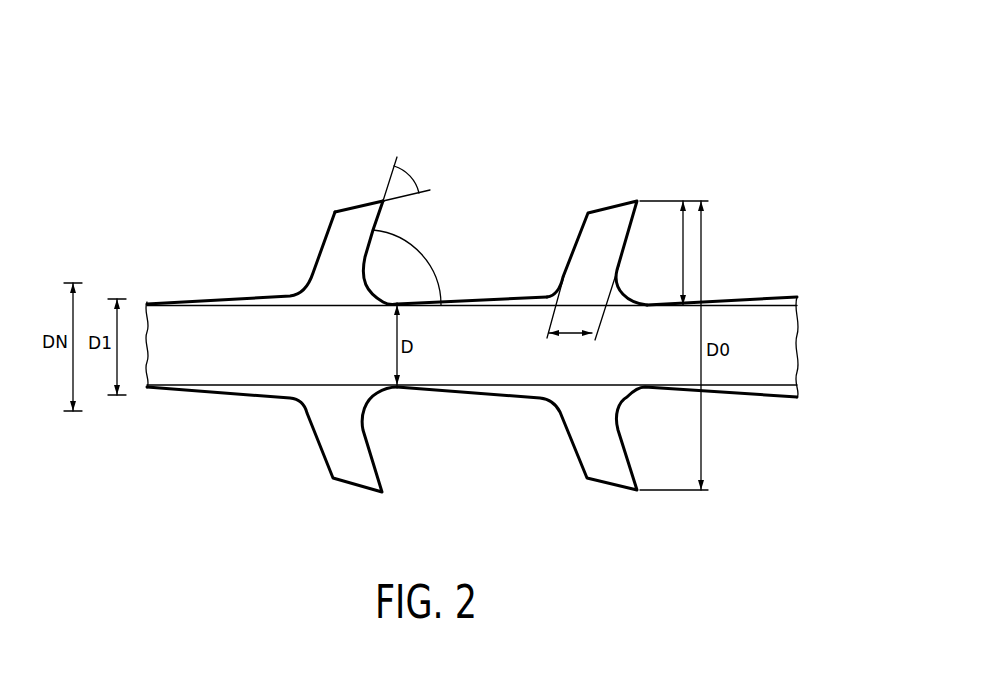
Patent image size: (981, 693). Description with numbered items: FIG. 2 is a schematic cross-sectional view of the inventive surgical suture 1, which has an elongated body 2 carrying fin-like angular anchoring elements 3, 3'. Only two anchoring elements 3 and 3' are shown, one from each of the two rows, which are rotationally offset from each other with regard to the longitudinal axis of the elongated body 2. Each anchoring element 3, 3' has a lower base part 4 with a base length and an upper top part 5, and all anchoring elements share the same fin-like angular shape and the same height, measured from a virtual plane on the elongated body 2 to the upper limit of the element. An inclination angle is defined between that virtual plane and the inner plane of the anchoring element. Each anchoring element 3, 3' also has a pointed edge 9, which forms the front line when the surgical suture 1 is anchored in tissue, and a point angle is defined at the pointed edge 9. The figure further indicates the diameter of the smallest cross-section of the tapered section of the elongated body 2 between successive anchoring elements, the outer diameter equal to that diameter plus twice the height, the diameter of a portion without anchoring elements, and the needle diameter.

The surgical suture 1 is at (592, 108).
The elongated body 2 is at (215, 359).
The anchoring element 3 is at (294, 231).
The anchoring element 3' is at (272, 458).
The lower base part 4 is at (318, 275).
The upper top part 5 is at (353, 215).
The pointed edge 9 is at (652, 193).